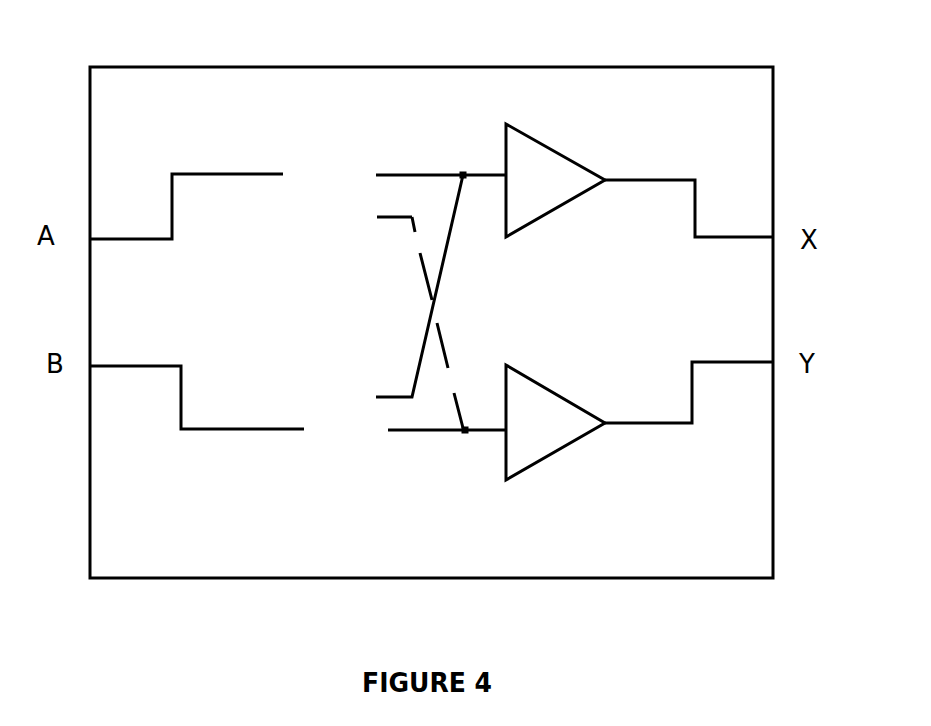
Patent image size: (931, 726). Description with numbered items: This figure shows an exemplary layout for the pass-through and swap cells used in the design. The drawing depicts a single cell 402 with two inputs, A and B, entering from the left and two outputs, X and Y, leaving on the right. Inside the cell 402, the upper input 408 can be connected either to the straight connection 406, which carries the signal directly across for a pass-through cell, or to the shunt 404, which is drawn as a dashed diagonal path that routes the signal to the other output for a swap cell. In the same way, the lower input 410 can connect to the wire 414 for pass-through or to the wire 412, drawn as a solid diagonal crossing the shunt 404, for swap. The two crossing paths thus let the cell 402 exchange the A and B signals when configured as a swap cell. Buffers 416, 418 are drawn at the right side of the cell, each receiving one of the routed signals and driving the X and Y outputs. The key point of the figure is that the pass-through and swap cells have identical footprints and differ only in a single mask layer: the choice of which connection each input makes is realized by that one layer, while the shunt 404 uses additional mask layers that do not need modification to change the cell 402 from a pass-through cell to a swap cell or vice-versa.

The cell 402 is at (152, 78).
The shunt 404 is at (381, 218).
The straight connection 406 is at (390, 175).
The input 408 is at (250, 174).
The input 410 is at (250, 429).
The wire 412 is at (378, 397).
The wire 414 is at (413, 433).
The first output buffer 416 is at (568, 195).
The second output buffer 418 is at (563, 440).